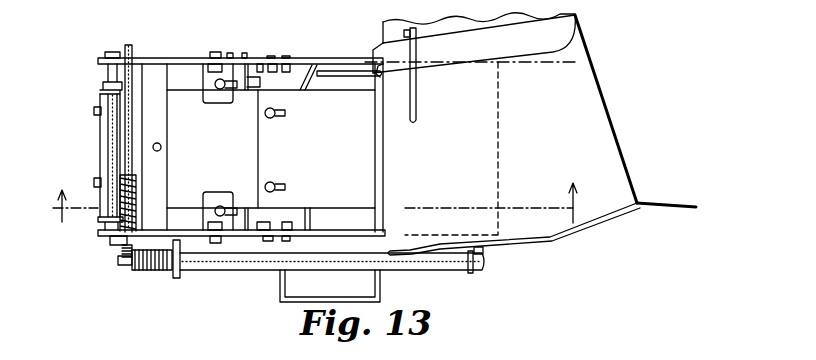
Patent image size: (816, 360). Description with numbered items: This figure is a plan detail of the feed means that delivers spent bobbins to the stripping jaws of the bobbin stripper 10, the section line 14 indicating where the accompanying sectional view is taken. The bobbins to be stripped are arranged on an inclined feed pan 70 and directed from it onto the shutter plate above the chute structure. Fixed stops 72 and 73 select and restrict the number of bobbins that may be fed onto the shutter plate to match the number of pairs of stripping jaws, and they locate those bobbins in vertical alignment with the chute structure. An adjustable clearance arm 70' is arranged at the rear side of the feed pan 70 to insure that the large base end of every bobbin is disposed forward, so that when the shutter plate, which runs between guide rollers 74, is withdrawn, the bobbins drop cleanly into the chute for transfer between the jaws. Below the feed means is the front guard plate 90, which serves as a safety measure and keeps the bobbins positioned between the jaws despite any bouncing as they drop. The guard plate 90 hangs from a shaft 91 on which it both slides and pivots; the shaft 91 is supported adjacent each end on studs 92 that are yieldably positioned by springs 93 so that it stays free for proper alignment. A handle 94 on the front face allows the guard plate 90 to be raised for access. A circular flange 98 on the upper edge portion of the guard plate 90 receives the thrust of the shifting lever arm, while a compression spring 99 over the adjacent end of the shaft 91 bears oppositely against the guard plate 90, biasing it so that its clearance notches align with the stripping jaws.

The frame assembly 10 is at (153, 58).
The section line 14 is at (318, 203).
The inclined feed pan 70 is at (530, 134).
The adjustable clearance arm 70' is at (434, 75).
The fixed stop 72 is at (312, 65).
The fixed stop 73 is at (312, 219).
The guide rollers 74 is at (207, 63).
The front guard plate 90 is at (250, 270).
The shaft 91 is at (473, 271).
The studs 92 is at (123, 252).
The springs 93 is at (110, 238).
The handle 94 is at (283, 302).
The circular flange 98 is at (179, 276).
The compression spring 99 is at (152, 268).